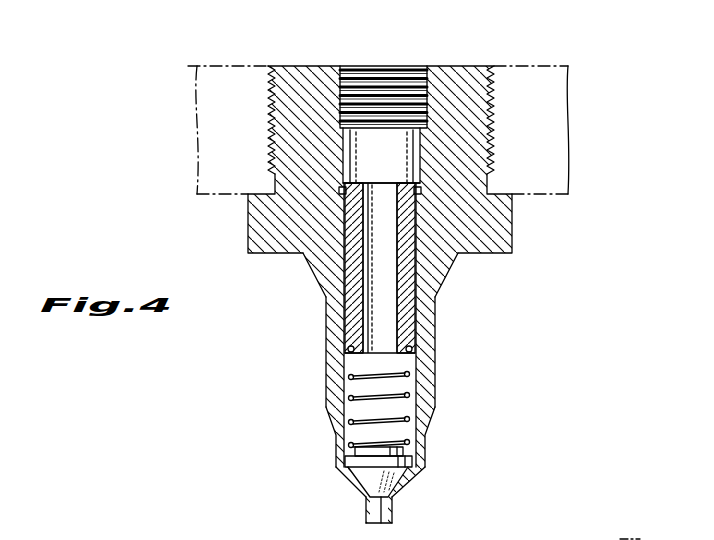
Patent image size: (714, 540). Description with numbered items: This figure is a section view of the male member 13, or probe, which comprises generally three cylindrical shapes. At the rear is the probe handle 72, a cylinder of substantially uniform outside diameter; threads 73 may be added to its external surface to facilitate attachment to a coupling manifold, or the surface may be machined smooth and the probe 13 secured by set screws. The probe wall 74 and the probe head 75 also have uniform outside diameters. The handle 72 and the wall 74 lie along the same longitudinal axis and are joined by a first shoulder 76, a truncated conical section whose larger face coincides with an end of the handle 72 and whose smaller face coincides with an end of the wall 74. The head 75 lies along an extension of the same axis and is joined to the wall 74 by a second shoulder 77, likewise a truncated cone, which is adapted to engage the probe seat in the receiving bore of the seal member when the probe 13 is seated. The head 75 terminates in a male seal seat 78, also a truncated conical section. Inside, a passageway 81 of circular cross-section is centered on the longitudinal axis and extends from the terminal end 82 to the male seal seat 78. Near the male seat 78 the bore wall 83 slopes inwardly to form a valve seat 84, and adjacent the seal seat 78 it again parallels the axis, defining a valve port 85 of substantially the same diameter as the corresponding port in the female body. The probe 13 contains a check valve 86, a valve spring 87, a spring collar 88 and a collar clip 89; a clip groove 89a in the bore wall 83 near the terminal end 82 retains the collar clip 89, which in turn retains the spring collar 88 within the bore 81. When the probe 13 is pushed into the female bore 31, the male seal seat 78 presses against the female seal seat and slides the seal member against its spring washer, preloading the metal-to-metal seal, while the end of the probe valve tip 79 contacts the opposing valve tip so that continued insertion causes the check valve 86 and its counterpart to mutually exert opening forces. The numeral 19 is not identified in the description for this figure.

The male member 13 is at (388, 275).
The inlet bore with internal thread 19 is at (352, 66).
The female bore 31 is at (485, 539).
The probe handle 72 is at (513, 208).
The threads 73 is at (496, 110).
The probe wall 74 is at (436, 343).
The probe head 75 is at (426, 458).
The first shoulder 76 is at (447, 274).
The second shoulder 77 is at (436, 425).
The male seal seat 78 is at (407, 470).
The probe valve tip 79 is at (364, 522).
The passageway 81 is at (365, 148).
The terminal end 82 is at (440, 66).
The bore wall 83 is at (347, 441).
The valve seat 84 is at (338, 483).
The valve port 85 is at (358, 497).
The check valve 86 is at (398, 492).
The valve spring 87 is at (350, 376).
The spring collar 88 is at (350, 313).
The collar clip 89 is at (419, 193).
The clip groove 89a is at (341, 192).